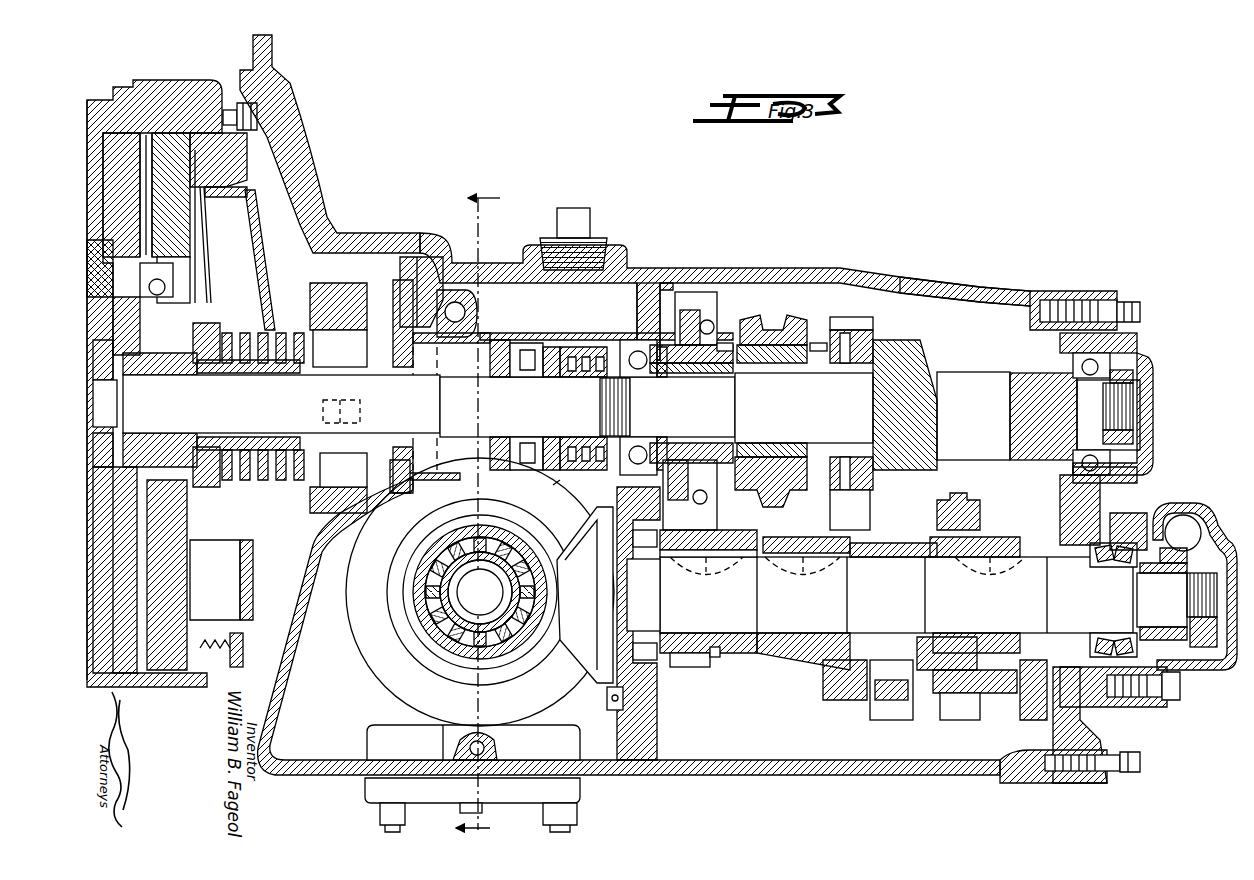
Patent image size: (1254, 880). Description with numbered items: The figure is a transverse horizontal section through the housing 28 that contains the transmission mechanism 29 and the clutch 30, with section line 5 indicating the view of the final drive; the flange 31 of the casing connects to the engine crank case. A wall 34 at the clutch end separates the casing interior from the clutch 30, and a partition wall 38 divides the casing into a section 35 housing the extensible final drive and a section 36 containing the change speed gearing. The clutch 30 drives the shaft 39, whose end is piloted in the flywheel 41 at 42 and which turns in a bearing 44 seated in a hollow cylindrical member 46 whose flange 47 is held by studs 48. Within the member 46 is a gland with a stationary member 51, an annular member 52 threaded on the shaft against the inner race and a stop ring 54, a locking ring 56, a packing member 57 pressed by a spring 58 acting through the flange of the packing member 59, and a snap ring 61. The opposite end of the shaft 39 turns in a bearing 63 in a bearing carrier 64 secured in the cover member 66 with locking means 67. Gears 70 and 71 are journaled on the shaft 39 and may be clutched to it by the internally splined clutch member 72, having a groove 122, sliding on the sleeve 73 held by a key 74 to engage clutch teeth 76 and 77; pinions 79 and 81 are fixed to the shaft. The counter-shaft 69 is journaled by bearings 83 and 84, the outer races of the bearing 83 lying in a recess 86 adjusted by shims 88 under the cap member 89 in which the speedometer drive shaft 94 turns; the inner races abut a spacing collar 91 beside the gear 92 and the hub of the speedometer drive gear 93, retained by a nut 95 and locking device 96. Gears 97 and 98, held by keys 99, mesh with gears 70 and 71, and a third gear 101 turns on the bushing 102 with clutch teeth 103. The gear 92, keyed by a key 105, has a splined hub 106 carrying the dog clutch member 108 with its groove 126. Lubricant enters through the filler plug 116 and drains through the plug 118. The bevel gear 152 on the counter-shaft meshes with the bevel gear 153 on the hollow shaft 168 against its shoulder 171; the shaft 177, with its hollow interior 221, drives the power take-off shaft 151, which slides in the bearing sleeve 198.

The section line 5- 5 is at (486, 513).
The housing 28 is at (728, 269).
The transmission mechanism 29 is at (758, 660).
The clutch 30 is at (188, 78).
The flange 31 is at (275, 53).
The wall 34 is at (303, 574).
The section 35 is at (447, 288).
The section 36 is at (945, 293).
The partition wall 38 is at (645, 290).
The shaft 39 is at (400, 411).
The flywheel 41 is at (113, 85).
The pilot 42 is at (113, 360).
The bearing 44 is at (620, 334).
The hollow cylindrical member 46 is at (492, 343).
The flange 47 is at (397, 300).
The studs 48 is at (394, 306).
The annular stationary member 51 is at (511, 341).
The annular member 52 is at (580, 345).
The stop ring 54 is at (656, 380).
The locking ring 56 is at (617, 508).
The packing member 57 is at (553, 345).
The spring 58 is at (573, 380).
The packing member 59 is at (557, 480).
The snap ring 61 is at (523, 472).
The bearing 63 is at (1120, 345).
The bearing carrier 64 is at (1153, 410).
The cover member 66 is at (1115, 300).
The locking means 67 is at (1130, 385).
The counter-shaft 69 is at (812, 625).
The gear 70 is at (710, 316).
The gear 71 is at (860, 340).
The clutch member 72 is at (830, 322).
The externally splined sleeve 73 is at (790, 482).
The key 74 is at (787, 380).
The clutch teeth 76 is at (723, 342).
The clutch teeth 77 is at (818, 342).
The pinion 79 is at (900, 360).
The pinion 81 is at (1040, 385).
The bearing 83 is at (1135, 528).
The bearing 84 is at (655, 680).
The recess 86 is at (1160, 695).
The shims 88 is at (1160, 535).
The cap member 89 is at (1195, 528).
The spacing collar 91 is at (1060, 570).
The gear 92 is at (1022, 708).
The speedometer drive gear 93 is at (1210, 667).
The speedometer drive shaft 94 is at (1205, 512).
The nut 95 is at (1222, 585).
The locking device 96 is at (1236, 652).
The gear 97 is at (718, 657).
The gear 98 is at (827, 685).
The keys 99 is at (803, 573).
The third gear 101 is at (907, 716).
The bearing bushing 102 is at (878, 567).
The clutch teeth 103 is at (927, 670).
The key 105 is at (990, 573).
The splined hub 106 is at (1013, 672).
The dog clutch member 108 is at (952, 500).
The filler plug 116 is at (580, 218).
The plug 118 is at (458, 806).
The groove 122 is at (763, 330).
The groove 126 is at (960, 695).
The power take-off shaft 151 is at (432, 608).
The bevel gear 152 is at (593, 668).
The bevel gear 153 is at (363, 717).
The hollow shaft 168 is at (395, 680).
The shoulder 171 is at (400, 575).
The shaft 177 is at (445, 625).
The bearing sleeve 198 is at (418, 587).
The hollow interior 221 is at (466, 602).